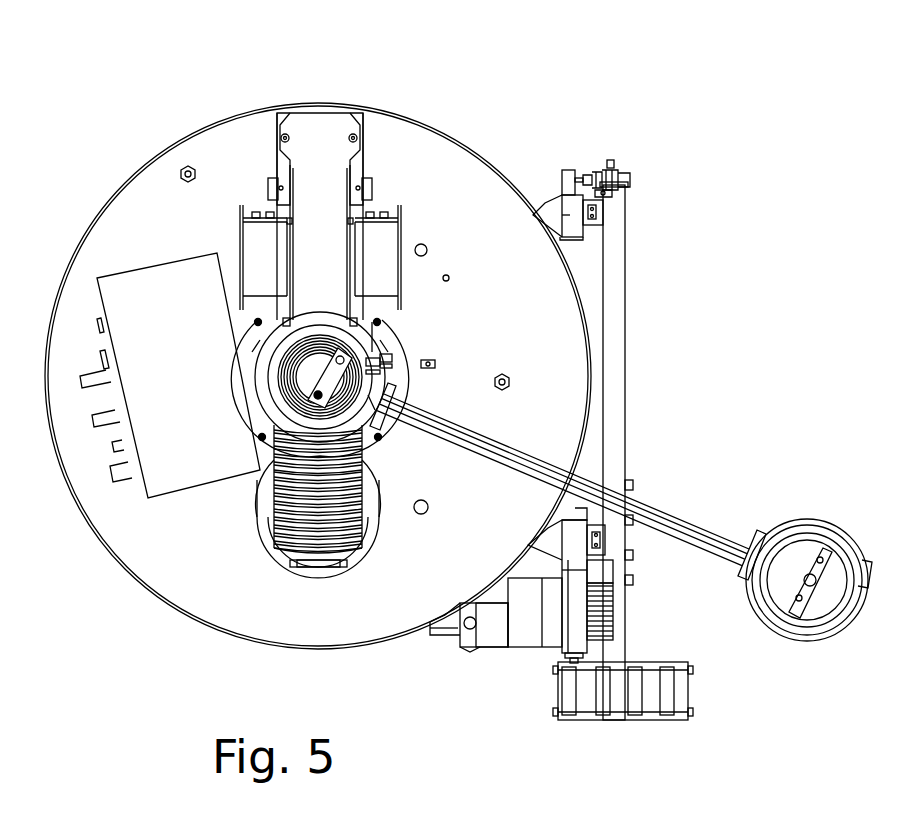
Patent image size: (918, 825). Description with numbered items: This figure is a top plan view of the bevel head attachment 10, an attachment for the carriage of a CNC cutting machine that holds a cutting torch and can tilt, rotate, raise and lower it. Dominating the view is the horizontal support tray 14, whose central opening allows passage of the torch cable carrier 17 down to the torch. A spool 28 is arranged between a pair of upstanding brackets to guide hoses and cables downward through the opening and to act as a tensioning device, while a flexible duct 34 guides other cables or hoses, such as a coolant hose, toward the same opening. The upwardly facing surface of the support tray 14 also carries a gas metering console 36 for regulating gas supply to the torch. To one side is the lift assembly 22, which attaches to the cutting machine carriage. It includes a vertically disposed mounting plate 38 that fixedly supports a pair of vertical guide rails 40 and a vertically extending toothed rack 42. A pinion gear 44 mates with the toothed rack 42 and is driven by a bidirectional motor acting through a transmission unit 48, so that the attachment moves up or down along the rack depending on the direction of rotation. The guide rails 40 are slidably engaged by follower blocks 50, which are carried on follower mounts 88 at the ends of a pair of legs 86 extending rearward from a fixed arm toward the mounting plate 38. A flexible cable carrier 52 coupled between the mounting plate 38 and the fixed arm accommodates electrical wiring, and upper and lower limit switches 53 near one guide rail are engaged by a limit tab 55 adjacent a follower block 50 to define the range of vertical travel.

The bevel head attachment 10 is at (616, 59).
The horizontal support tray 14 is at (521, 344).
The torch cable carrier 17 is at (331, 266).
The lift assembly 22 is at (522, 676).
The spool 28 is at (242, 244).
The flexible duct 34 is at (352, 483).
The gas metering console 36 is at (183, 493).
The mounting plate 38 is at (625, 422).
The vertical guide rails 40 is at (605, 217).
The toothed rack 42 is at (607, 569).
The pinion gear 44 is at (607, 613).
The transmission unit 48 is at (500, 637).
The follower blocks 50 is at (589, 237).
The flexible cable carrier 52 is at (614, 707).
The limit switches 53 is at (604, 165).
The limit tab 55 is at (567, 172).
The legs 86 is at (545, 208).
The follower mount 88 is at (570, 218).